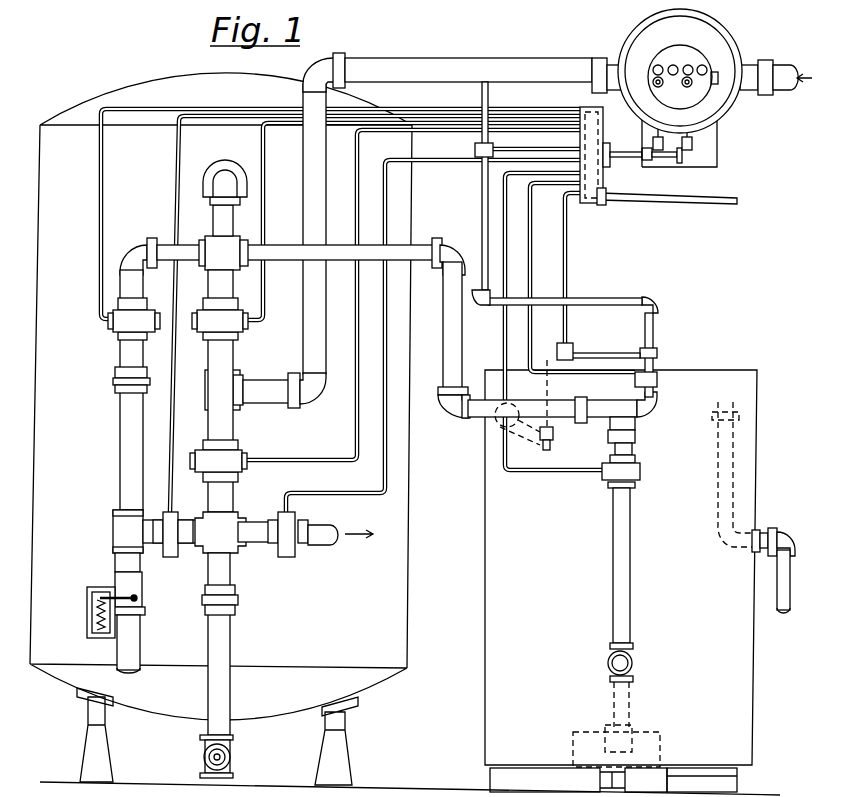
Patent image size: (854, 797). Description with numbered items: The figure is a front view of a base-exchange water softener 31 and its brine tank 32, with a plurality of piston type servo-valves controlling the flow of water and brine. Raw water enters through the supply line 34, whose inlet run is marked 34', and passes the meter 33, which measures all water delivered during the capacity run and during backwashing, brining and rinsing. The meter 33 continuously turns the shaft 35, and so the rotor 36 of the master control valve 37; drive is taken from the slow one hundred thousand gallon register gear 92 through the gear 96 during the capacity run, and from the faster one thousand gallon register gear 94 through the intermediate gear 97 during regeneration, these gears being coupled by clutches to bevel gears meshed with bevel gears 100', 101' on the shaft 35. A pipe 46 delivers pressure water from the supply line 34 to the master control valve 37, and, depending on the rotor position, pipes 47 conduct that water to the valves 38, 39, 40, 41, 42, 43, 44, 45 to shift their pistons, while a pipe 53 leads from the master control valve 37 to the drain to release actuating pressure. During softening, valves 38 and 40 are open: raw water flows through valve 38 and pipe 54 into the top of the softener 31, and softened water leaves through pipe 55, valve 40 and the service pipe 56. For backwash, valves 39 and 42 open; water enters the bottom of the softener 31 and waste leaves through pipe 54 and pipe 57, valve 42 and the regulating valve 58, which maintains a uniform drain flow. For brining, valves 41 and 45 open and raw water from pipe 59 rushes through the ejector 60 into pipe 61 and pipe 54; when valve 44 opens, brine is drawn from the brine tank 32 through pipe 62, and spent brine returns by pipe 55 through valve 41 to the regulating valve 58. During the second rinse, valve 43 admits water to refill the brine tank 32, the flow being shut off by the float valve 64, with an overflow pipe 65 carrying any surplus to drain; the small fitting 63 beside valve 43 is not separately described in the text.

The base-exchange water softener 31 is at (393, 597).
The brine tank 32 is at (500, 716).
The meter 33 is at (728, 34).
The raw water supply line 34 is at (415, 217).
The pipe extension 34' is at (776, 96).
The shaft 35 is at (612, 160).
The rotor 36 is at (603, 124).
The master control valve 37 is at (602, 213).
The valve 38 is at (232, 321).
The valve 39 is at (225, 462).
The valve 40 is at (281, 557).
The valve 41 is at (172, 549).
The valve 42 is at (118, 324).
The valve 43 is at (568, 350).
The valve 44 is at (603, 480).
The valve 45 is at (658, 381).
The pipe 46 is at (545, 147).
The pipes 47 is at (465, 128).
The pipe 53 is at (675, 198).
The pipe 54 is at (230, 212).
The pipe 55 is at (218, 648).
The pipe 56 is at (322, 540).
The pipe 57 is at (183, 265).
The regulating valve 58 is at (130, 587).
The pipe 59 is at (655, 325).
The ejector 60 is at (596, 412).
The pipe 61 is at (458, 348).
The pipe 62 is at (620, 583).
The pipe 63 is at (610, 355).
The float valve 64 is at (516, 436).
The overflow pipe 65 is at (783, 603).
The register gear 92 is at (659, 65).
The register gear 94 is at (689, 65).
The gear 96 is at (653, 84).
The intermediate gear 97 is at (692, 84).
The bevel gear 100' is at (664, 140).
The bevel gear 101' is at (698, 140).